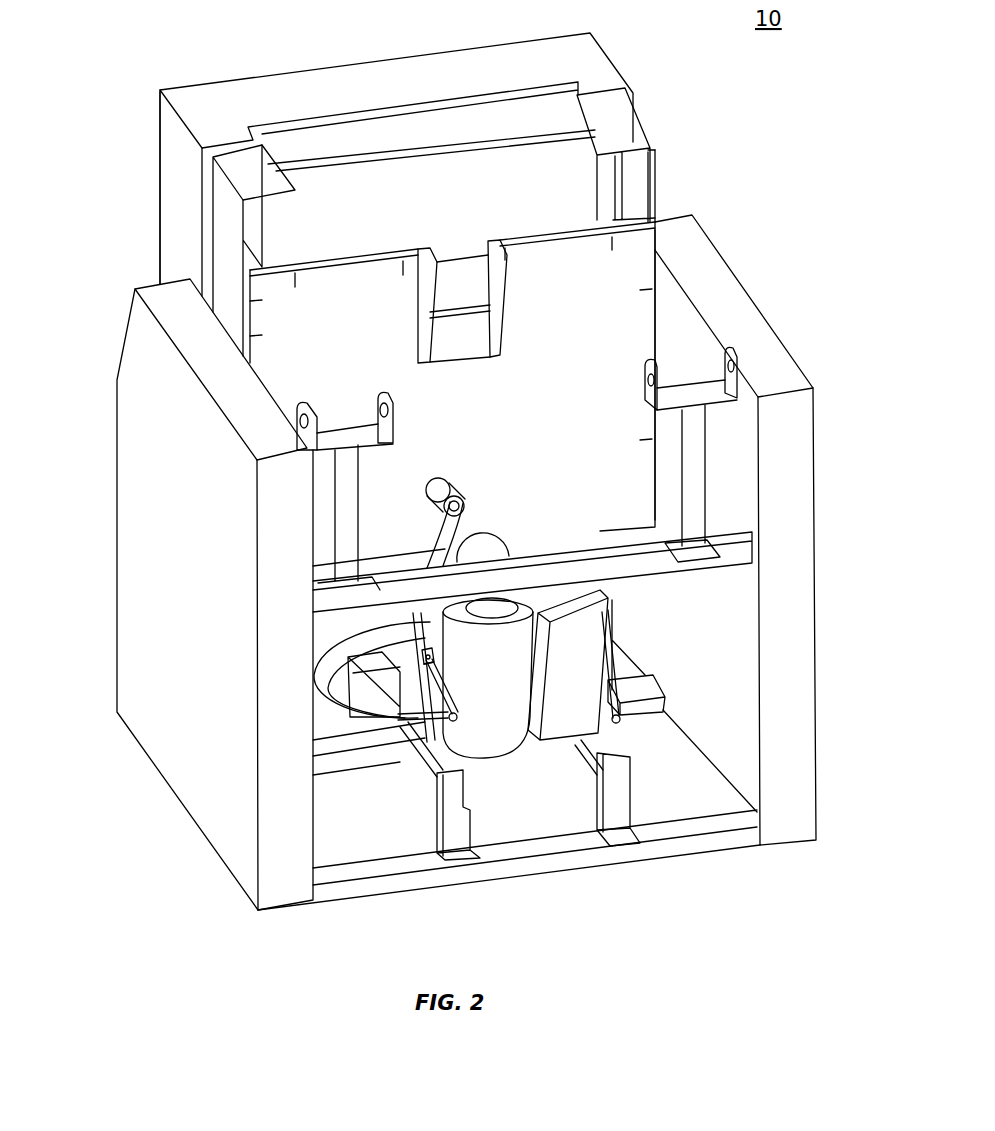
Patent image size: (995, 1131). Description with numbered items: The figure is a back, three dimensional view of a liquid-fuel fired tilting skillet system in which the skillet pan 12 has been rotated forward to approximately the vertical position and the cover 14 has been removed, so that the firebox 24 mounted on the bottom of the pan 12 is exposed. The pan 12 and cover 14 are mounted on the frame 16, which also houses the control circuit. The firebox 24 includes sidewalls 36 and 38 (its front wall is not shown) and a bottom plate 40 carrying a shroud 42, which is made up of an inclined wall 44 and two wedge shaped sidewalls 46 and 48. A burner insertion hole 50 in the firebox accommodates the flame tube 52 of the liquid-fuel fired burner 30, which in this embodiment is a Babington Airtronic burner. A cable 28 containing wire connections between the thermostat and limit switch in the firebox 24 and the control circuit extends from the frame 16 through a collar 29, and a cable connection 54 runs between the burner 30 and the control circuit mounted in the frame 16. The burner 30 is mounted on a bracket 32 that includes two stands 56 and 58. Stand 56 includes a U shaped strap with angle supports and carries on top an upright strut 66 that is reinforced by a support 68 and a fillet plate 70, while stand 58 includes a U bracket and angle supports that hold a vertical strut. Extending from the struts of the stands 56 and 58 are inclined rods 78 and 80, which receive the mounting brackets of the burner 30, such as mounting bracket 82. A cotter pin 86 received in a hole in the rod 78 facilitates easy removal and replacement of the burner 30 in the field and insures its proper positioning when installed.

The skillet pan 12 is at (613, 67).
The cover 14 is at (157, 128).
The frame 16 is at (775, 322).
The firebox 24 is at (620, 140).
The cable 28 is at (330, 648).
The collar 29 is at (453, 480).
The liquid-fuel fired burner 30 is at (497, 763).
The bracket 32 is at (538, 880).
The sidewall 36 is at (218, 188).
The sidewall 38 is at (657, 167).
The bottom plate 40 is at (508, 357).
The shroud 42 is at (512, 338).
The inclined wall 44 is at (460, 344).
The wedge shaped sidewall 46 is at (420, 297).
The wedge shaped sidewall 48 is at (505, 279).
The burner insertion hole 50 is at (449, 254).
The flame tube 52 is at (497, 527).
The cable connection 54 is at (370, 723).
The stand 56 is at (422, 825).
The stand 58 is at (628, 791).
The upright strut 66 is at (340, 670).
The support 68 is at (330, 687).
The fillet plate 70 is at (412, 760).
The inclined rod 78 is at (452, 722).
The inclined rod 80 is at (433, 659).
The mounting bracket 82 is at (433, 655).
The cotter pin 86 is at (436, 661).